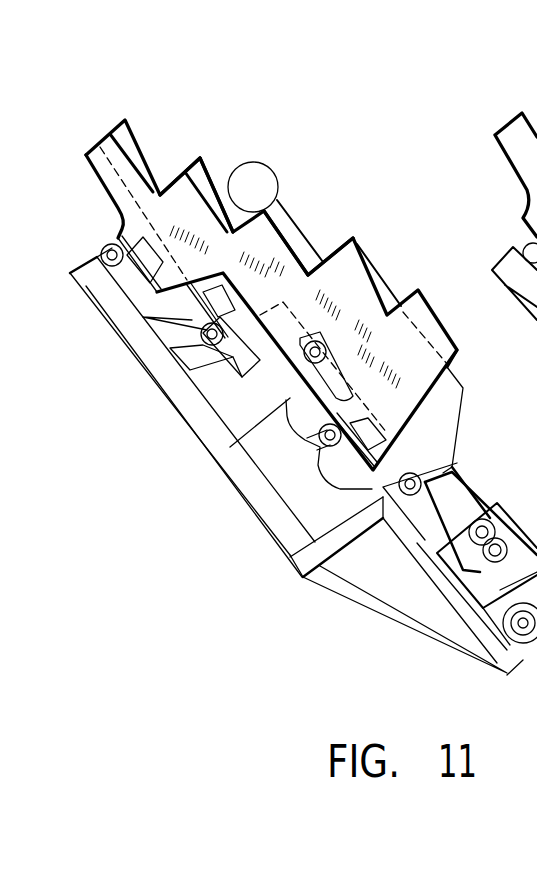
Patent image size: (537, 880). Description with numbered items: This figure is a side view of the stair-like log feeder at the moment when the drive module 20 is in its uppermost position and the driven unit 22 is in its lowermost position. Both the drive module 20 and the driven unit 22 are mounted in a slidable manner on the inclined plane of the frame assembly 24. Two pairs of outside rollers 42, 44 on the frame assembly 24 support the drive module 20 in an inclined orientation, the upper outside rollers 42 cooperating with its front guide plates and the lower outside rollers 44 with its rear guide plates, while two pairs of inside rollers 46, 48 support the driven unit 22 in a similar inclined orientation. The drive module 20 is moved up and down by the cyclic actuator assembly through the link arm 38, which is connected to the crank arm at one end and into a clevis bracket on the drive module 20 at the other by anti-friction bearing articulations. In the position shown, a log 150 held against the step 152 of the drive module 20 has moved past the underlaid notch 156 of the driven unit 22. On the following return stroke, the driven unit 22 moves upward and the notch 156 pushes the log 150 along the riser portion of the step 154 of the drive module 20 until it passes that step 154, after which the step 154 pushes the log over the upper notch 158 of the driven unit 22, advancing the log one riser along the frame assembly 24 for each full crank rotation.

The drive module 20 is at (458, 400).
The driven unit 22 is at (452, 336).
The frame assembly 24 is at (193, 438).
The link arm 38 is at (463, 493).
The upper outside rollers 42 is at (203, 348).
The lower outside rollers 44 is at (405, 528).
The inside rollers 46 is at (97, 253).
The inside rollers 48 is at (322, 474).
The log 150 is at (258, 177).
The step 152 is at (277, 212).
The step 154 is at (198, 157).
The underlaid notch 156 is at (262, 225).
The upper notch 158 is at (185, 183).